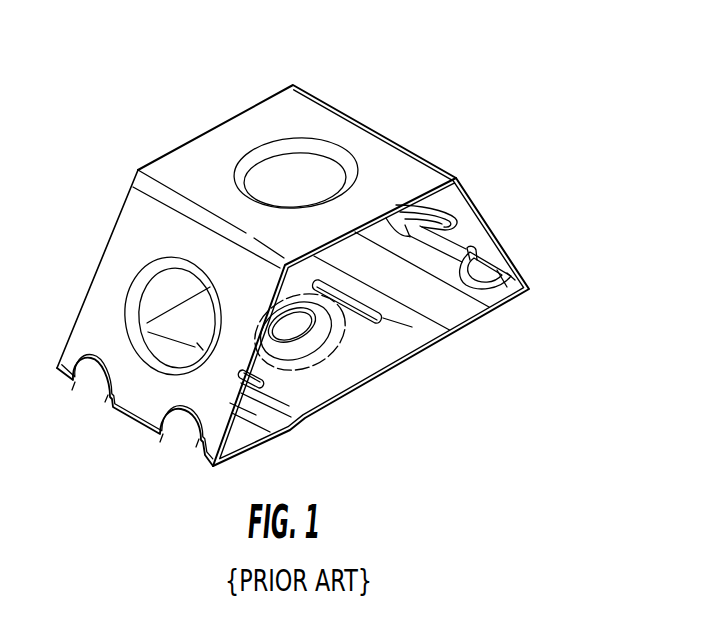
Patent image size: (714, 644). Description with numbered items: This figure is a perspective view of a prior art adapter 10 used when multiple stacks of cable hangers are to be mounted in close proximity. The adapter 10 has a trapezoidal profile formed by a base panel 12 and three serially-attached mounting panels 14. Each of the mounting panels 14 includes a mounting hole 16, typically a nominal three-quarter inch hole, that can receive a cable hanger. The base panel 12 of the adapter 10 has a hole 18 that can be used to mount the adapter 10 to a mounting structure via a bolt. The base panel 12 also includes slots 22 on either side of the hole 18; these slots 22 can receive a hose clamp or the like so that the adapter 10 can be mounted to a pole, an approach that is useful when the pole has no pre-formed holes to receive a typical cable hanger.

The adapter 10 is at (480, 125).
The base panel 12 is at (397, 331).
The mounting panels 14 is at (194, 160).
The mounting hole 16 is at (298, 178).
The hole 18 is at (296, 326).
The slots 22 is at (253, 380).